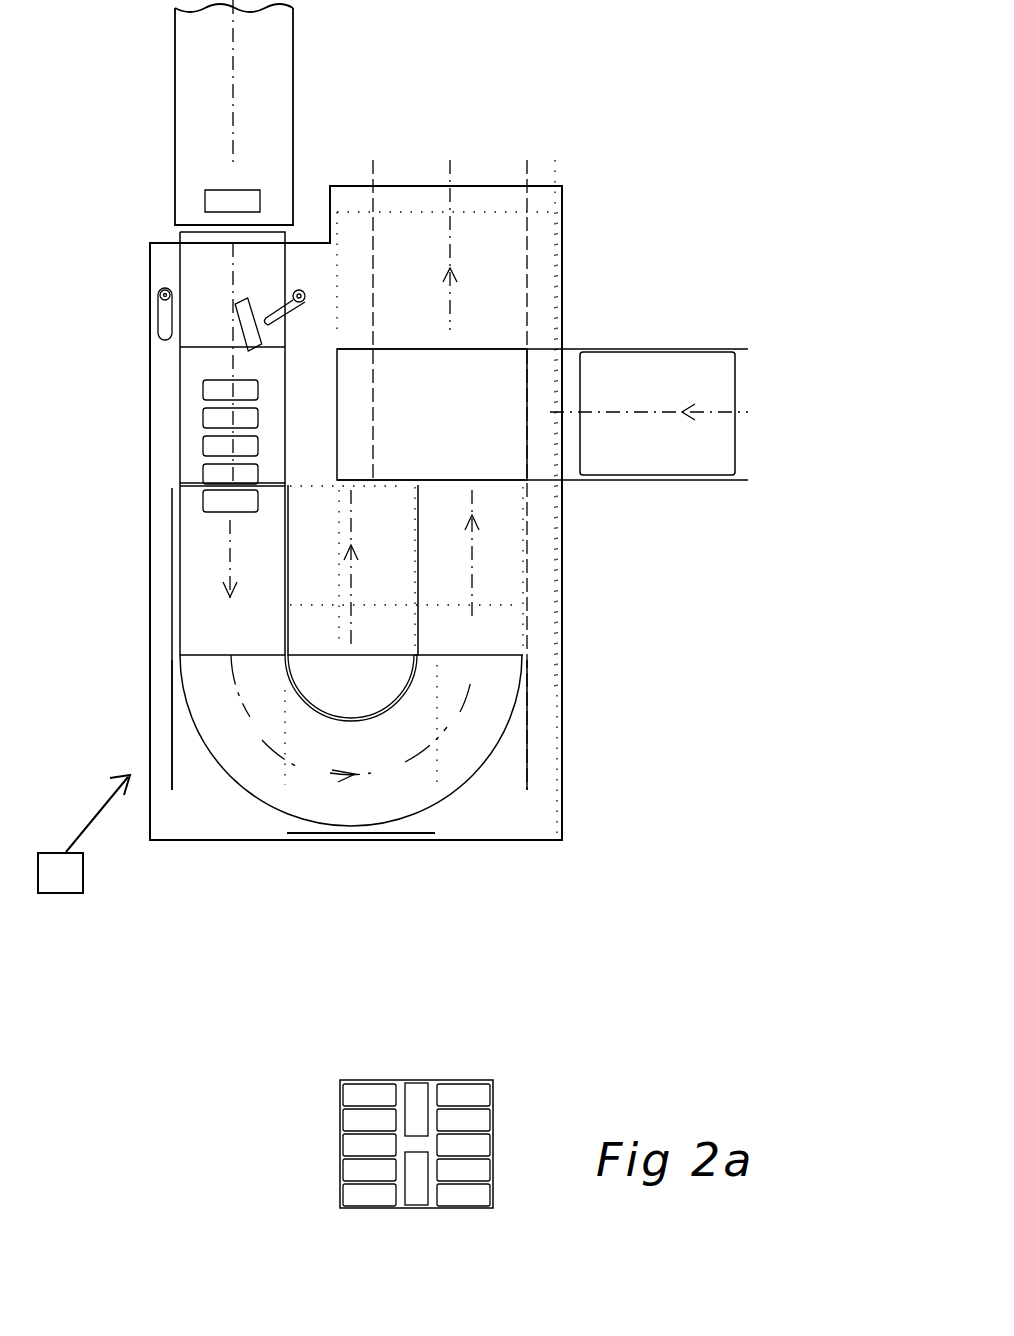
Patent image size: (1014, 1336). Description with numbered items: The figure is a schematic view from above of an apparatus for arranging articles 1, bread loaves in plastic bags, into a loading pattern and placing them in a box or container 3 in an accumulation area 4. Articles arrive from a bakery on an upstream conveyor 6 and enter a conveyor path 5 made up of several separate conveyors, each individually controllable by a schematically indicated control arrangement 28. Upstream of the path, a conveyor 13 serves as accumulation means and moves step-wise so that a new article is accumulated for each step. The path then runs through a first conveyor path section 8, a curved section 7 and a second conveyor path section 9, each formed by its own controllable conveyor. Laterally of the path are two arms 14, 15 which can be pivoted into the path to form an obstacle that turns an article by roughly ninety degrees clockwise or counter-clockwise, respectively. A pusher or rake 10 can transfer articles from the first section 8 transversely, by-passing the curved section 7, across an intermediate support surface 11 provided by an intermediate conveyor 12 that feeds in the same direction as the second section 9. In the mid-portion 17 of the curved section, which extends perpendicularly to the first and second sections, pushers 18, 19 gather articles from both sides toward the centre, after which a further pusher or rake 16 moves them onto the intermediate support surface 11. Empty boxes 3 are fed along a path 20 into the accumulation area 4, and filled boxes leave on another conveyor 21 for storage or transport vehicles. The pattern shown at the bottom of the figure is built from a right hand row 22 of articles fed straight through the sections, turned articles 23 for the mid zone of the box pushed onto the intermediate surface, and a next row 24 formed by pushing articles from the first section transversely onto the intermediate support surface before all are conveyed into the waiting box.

The articles 1 is at (205, 203).
The box or container 3 is at (668, 348).
The accumulation area 4 is at (493, 373).
The conveyor path 5 is at (187, 128).
The upstream conveyor 6 is at (278, 130).
The curved section 7 is at (275, 785).
The first conveyor path section 8 is at (190, 570).
The second conveyor path section 9 is at (510, 636).
The pusher or rake 10 is at (172, 540).
The intermediate support surface 11 is at (310, 632).
The intermediate conveyor 12 is at (395, 585).
The accumulation conveyor 13 is at (190, 415).
The arm 14 is at (167, 325).
The arm 15 is at (290, 322).
The pusher or rake 16 is at (390, 840).
The mid-portion of curved section 17 is at (370, 790).
The pusher 18 is at (172, 735).
The pusher 19 is at (527, 730).
The path for feeding empty boxes 20 is at (745, 400).
The conveyor 21 is at (487, 200).
The right hand row 22 is at (468, 1092).
The articles for the mid zone 23 is at (418, 1092).
The next row of articles 24 is at (368, 1095).
The control arrangement 28 is at (83, 877).